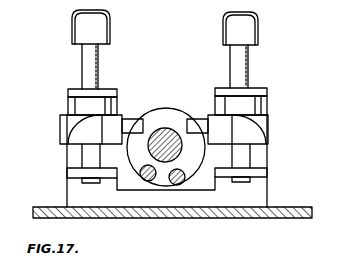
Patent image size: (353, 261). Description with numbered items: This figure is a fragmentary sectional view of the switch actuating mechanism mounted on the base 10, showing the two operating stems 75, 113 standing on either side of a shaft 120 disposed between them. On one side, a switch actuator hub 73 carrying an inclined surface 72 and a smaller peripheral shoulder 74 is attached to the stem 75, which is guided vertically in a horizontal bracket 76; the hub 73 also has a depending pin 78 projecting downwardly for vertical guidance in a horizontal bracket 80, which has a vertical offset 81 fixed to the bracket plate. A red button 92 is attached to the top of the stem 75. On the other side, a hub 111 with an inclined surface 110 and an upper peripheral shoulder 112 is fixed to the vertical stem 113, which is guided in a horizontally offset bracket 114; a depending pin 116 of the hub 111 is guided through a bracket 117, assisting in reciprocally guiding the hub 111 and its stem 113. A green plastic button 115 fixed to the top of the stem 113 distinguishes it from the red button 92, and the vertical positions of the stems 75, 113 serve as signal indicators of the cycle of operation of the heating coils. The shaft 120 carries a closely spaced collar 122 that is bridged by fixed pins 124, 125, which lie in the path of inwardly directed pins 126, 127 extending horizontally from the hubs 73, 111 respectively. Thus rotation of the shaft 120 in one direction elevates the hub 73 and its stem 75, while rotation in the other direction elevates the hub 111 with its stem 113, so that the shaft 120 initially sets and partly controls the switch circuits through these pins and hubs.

The base 10 is at (300, 217).
The inclined surface 72 is at (253, 137).
The switch actuator hub 73 is at (263, 125).
The peripheral shoulder 74 is at (248, 110).
The stem 75 is at (244, 58).
The horizontal bracket 76 is at (261, 90).
The depending pin 78 is at (247, 183).
The horizontal bracket 80 is at (255, 172).
The vertical offset 81 is at (250, 197).
The red button 92 is at (248, 30).
The inclined surface 110 is at (78, 135).
The hub 111 is at (62, 125).
The upper peripheral shoulder 112 is at (83, 108).
The vertical stem 113 is at (88, 67).
The horizontally offset bracket 114 is at (80, 92).
The green plastic button 115 is at (80, 32).
The depending pin 116 is at (82, 183).
The bracket 117 is at (77, 172).
The shaft 120 is at (166, 136).
The collar 122 is at (165, 128).
The fixed pin 124 is at (179, 186).
The fixed pin 125 is at (155, 181).
The inwardly directed pin 126 is at (200, 118).
The inwardly directed pin 127 is at (130, 118).